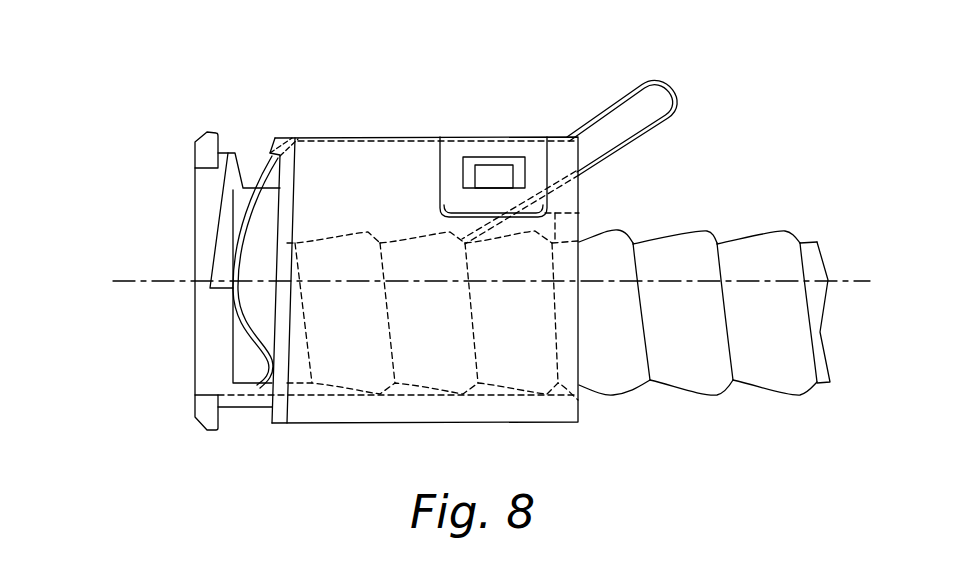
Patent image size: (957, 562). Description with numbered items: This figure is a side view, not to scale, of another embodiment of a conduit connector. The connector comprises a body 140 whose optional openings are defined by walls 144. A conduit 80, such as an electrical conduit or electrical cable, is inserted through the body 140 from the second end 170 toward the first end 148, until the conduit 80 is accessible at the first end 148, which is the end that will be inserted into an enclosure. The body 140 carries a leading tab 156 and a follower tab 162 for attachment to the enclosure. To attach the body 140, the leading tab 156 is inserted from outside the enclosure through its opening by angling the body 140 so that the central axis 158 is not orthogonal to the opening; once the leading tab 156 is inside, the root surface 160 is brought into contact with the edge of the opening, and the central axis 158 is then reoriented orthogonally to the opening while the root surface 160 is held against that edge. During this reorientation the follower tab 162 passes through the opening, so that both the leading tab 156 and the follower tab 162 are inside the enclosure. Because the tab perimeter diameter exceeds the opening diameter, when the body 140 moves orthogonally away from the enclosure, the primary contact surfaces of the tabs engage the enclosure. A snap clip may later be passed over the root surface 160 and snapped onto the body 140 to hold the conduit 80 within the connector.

The conduit 80 is at (745, 258).
The body 140 is at (436, 114).
The walls 144 is at (320, 137).
The first end 148 is at (203, 317).
The leading tab 156 is at (205, 152).
The central axis 158 is at (152, 280).
The root surface 160 is at (243, 190).
The follower tab 162 is at (208, 417).
The second end 170 is at (580, 196).